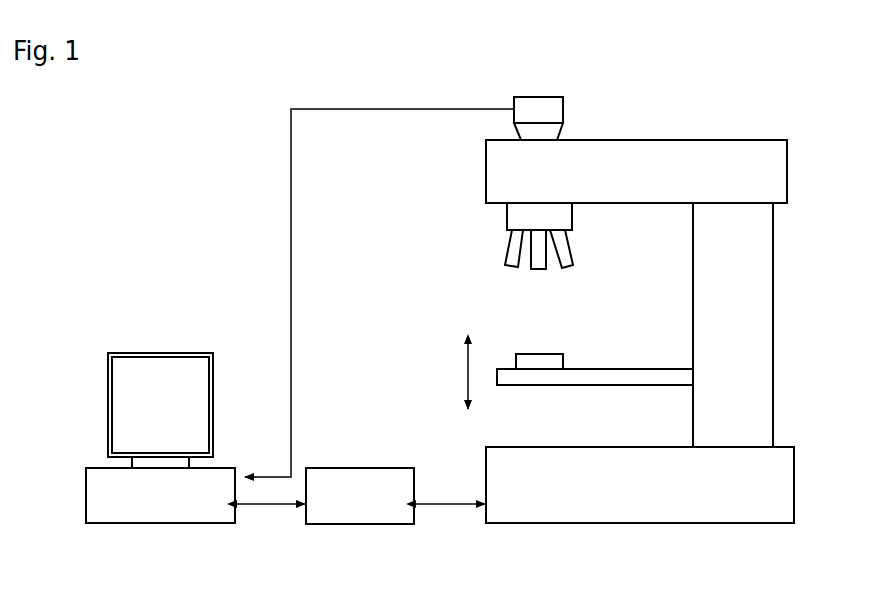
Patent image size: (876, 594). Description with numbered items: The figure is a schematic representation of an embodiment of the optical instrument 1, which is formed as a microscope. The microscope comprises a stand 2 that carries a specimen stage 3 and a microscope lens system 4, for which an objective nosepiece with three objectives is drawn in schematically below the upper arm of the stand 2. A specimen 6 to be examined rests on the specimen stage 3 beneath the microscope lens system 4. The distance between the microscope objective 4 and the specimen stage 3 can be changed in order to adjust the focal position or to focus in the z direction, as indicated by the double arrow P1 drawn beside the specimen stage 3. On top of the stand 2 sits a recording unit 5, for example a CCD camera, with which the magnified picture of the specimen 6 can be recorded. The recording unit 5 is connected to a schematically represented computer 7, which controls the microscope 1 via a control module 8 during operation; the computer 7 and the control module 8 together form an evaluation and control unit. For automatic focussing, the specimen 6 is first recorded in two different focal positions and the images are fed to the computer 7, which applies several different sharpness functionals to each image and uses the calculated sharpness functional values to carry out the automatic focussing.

The optical instrument 1 is at (247, 227).
The stand 2 is at (773, 330).
The specimen stage 3 is at (582, 385).
The microscope lens system 4 is at (507, 222).
The recording unit 5 is at (514, 108).
The specimen 6 is at (563, 360).
The computer 7 is at (148, 523).
The control module 8 is at (340, 524).
The double arrow P1 is at (463, 373).